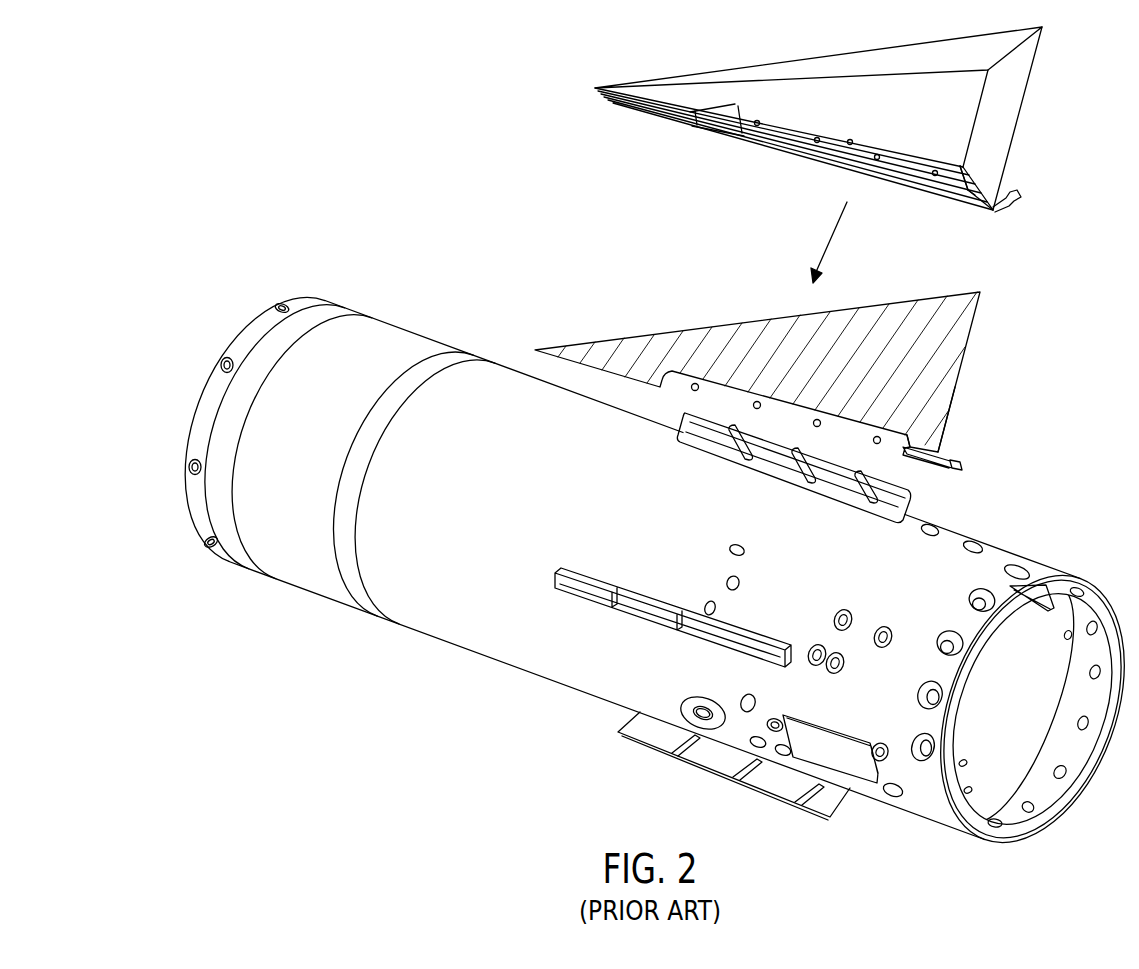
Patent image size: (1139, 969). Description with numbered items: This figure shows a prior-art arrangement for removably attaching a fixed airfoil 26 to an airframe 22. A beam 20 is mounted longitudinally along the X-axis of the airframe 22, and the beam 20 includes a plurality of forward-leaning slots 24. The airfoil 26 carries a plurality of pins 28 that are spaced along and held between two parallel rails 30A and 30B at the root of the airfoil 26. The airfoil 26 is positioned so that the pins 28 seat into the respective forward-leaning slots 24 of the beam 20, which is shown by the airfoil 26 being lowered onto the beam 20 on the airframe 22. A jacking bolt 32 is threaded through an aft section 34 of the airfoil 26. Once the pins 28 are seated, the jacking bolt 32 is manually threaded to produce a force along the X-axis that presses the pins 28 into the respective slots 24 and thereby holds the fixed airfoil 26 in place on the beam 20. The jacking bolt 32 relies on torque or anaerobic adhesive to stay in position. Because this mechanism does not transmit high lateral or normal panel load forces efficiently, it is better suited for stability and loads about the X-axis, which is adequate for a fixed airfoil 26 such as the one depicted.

The beam 20 is at (908, 496).
The airframe 22 is at (466, 655).
The forward-leaning slots 24 is at (742, 780).
The airfoil 26 is at (813, 44).
The pins 28 is at (815, 142).
The rail 30A is at (978, 207).
The rail 30B is at (988, 169).
The jacking bolt 32 is at (1016, 195).
The aft section 34 is at (935, 430).